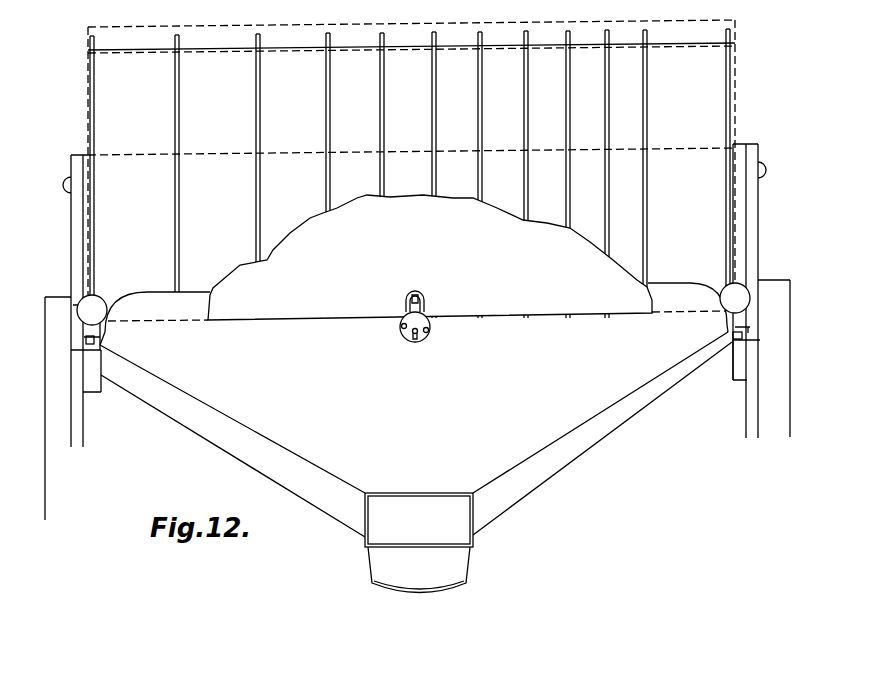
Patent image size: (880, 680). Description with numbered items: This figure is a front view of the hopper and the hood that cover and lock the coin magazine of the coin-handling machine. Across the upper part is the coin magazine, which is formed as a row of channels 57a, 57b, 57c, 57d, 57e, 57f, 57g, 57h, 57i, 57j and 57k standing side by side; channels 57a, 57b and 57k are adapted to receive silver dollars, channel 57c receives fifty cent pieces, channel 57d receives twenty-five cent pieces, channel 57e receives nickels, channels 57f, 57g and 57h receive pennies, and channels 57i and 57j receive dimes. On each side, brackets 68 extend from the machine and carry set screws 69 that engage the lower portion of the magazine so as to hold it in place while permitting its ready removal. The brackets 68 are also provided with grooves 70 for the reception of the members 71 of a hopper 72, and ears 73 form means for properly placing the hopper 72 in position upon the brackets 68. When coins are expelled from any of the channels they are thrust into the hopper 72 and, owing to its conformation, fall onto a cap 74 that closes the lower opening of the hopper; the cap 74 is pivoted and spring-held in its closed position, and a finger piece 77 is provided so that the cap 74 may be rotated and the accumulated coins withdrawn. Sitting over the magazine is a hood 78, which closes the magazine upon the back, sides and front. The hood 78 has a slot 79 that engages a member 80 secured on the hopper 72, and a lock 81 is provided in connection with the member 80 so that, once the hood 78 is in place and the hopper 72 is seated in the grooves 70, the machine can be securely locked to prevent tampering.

The channel 57a is at (118, 168).
The channel 57b is at (202, 176).
The channel 57c is at (281, 176).
The channel 57d is at (348, 175).
The channel 57e is at (401, 175).
The channel 57f is at (451, 175).
The channel 57g is at (497, 175).
The channel 57h is at (542, 174).
The channel 57i is at (582, 174).
The channel 57j is at (621, 174).
The channel 57k is at (686, 164).
The bracket 68 is at (78, 320).
The set screw 69 is at (730, 290).
The groove 70 is at (85, 341).
The member 71 is at (735, 326).
The hopper 72 is at (416, 410).
The ear 73 is at (100, 342).
The cap 74 is at (418, 545).
The finger piece 77 is at (419, 570).
The hood 78 is at (430, 257).
The slot 79 is at (421, 295).
The member 80 is at (411, 298).
The lock 81 is at (432, 327).